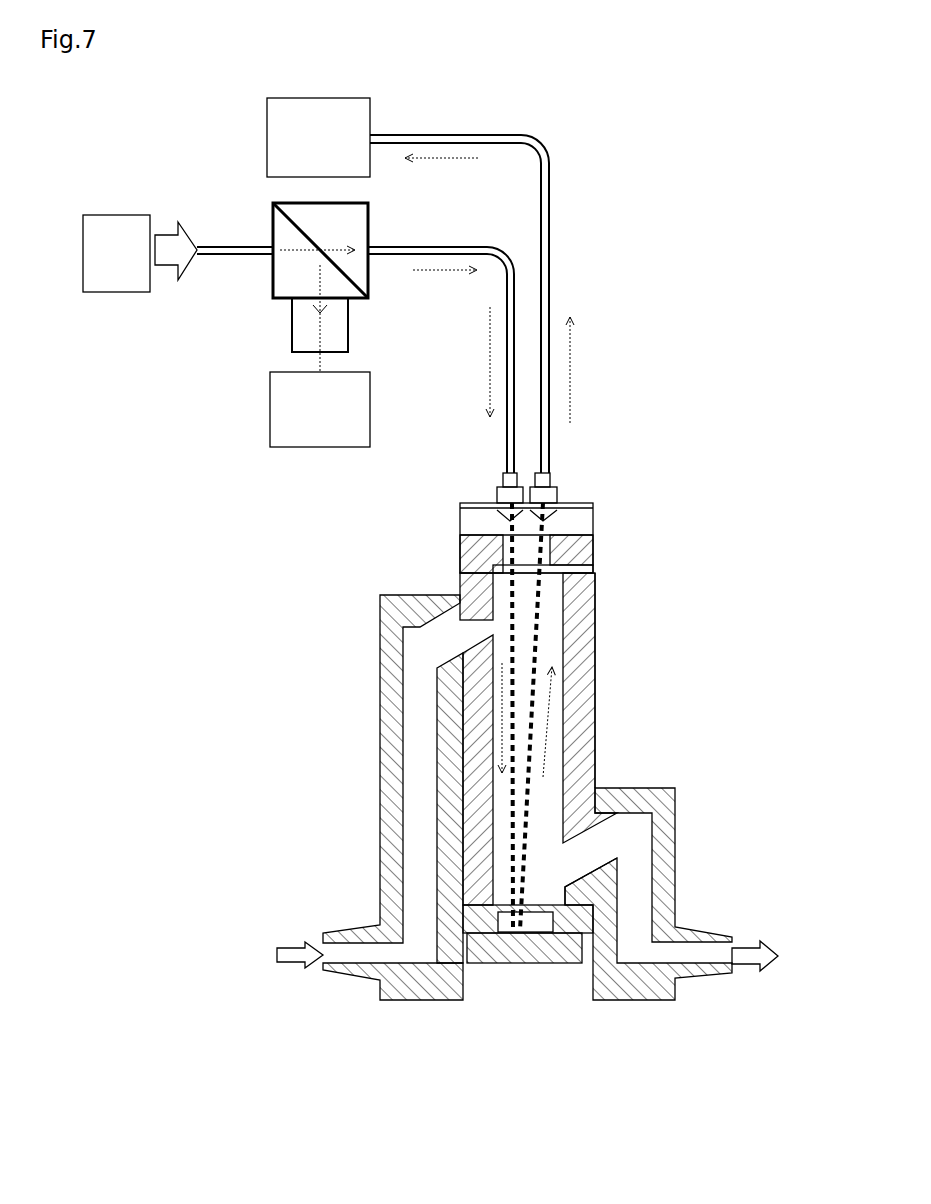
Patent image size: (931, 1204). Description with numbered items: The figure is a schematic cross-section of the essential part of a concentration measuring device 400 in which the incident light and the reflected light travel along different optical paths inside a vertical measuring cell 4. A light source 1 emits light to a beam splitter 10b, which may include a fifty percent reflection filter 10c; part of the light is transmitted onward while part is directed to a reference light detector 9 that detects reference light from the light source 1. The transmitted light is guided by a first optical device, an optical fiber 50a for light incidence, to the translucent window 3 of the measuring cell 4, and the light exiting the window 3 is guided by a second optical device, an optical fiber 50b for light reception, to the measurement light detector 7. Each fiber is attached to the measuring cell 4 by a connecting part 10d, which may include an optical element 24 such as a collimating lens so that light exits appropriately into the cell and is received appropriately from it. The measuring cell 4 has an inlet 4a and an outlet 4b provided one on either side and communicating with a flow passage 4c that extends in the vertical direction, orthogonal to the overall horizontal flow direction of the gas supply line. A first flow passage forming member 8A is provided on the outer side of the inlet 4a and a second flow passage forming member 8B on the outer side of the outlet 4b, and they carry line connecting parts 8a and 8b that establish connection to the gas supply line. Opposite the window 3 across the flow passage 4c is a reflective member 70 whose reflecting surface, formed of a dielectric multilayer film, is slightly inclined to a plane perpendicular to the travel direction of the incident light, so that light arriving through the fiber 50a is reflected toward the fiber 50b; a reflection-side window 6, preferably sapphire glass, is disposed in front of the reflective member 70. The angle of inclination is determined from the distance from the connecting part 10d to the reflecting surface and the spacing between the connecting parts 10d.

The light source 1 is at (120, 293).
The measurement light detector 7 is at (267, 135).
The reference light detector 9 is at (320, 448).
The beam splitter 10b is at (273, 210).
The 50% reflection filter 10c is at (368, 282).
The connecting part 10d is at (498, 489).
The optical element 24 is at (492, 517).
The translucent window 3 is at (598, 556).
The measuring cell 4 is at (597, 707).
The inlet 4a is at (486, 611).
The outlet 4b is at (562, 862).
The flow passage 4c is at (595, 645).
The optical fiber for light incidence 50a is at (507, 433).
The optical fiber for light reception 50b is at (549, 242).
The concentration measuring device 400 is at (680, 207).
The first flow passage forming member 8A is at (380, 796).
The second flow passage forming member 8B is at (667, 789).
The line connecting part 8a is at (340, 929).
The line connecting part 8b is at (700, 934).
The reflection-side window 6 is at (490, 936).
The reflective member 70 is at (528, 944).